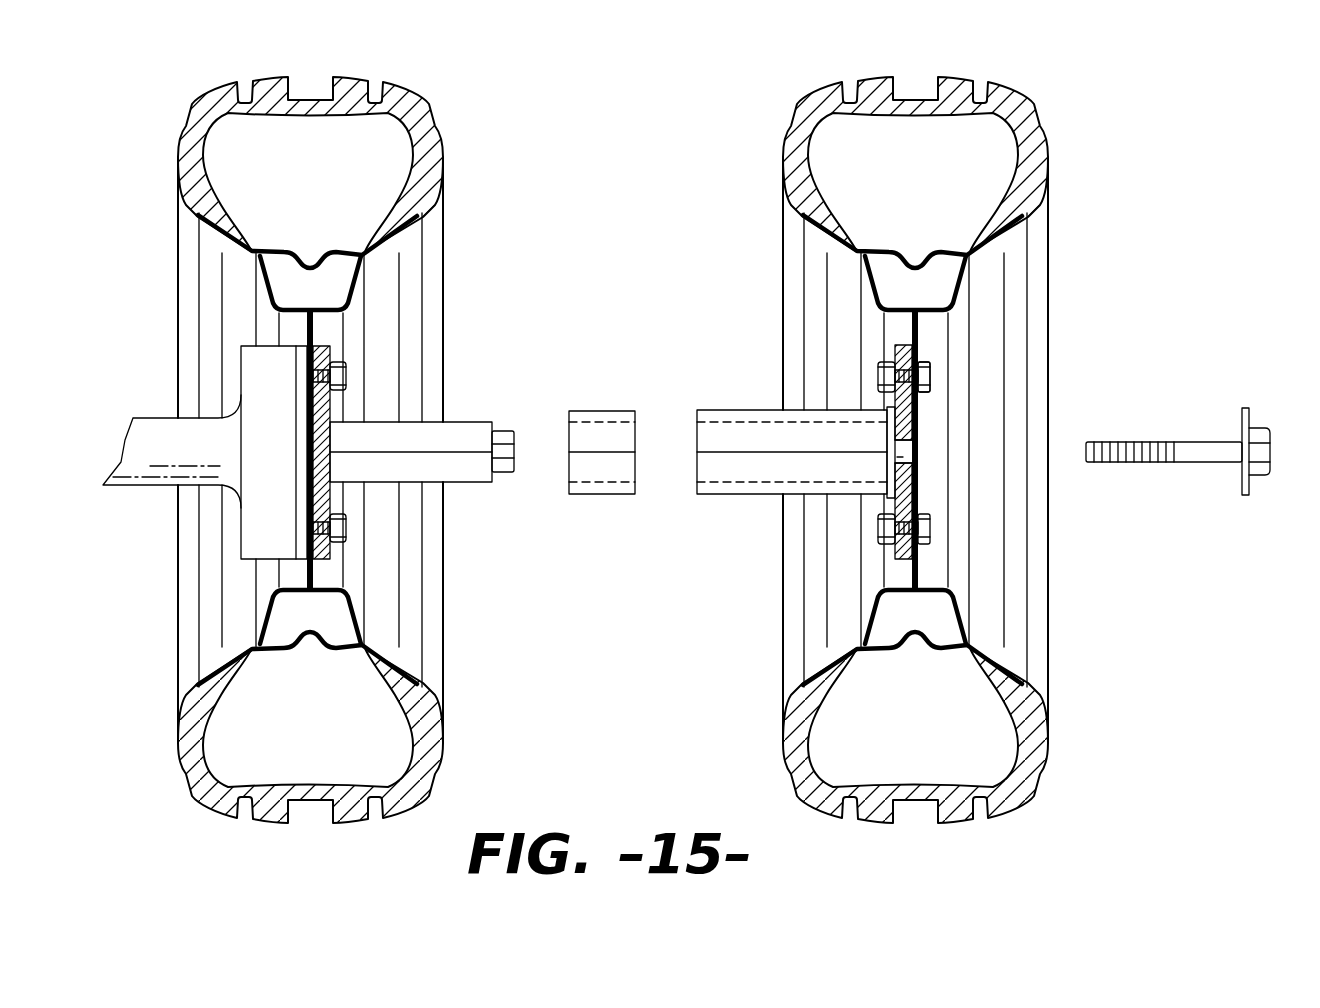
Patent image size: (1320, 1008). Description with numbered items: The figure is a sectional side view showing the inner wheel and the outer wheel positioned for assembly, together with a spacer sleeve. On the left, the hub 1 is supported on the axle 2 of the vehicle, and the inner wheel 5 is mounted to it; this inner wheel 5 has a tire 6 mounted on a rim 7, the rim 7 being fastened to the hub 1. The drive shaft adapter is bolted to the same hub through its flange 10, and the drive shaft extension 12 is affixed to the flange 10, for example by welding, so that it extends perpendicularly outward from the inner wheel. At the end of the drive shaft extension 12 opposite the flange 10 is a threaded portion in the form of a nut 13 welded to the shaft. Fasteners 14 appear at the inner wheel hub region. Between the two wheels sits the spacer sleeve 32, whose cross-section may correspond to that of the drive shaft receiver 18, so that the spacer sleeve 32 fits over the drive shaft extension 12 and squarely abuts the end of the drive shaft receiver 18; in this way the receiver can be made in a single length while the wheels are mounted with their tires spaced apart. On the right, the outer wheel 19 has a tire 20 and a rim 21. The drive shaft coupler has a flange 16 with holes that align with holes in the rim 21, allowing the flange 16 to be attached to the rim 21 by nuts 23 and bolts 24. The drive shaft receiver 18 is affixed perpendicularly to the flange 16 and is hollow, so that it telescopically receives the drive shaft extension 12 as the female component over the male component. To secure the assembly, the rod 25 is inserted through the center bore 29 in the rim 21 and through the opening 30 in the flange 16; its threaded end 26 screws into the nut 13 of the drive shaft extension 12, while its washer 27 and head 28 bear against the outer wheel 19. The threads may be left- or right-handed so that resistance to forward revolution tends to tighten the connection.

The hub 1 is at (258, 368).
The axle 2 is at (151, 420).
The inner wheel 5 is at (335, 427).
The tire 6 is at (329, 450).
The rim 7 is at (424, 236).
The flange 10 is at (333, 357).
The drive shaft extension 12 is at (453, 430).
The nut 13 is at (505, 453).
The bolts 14 is at (347, 373).
The spacer sleeve 32 is at (593, 427).
The outer wheel 19 is at (925, 427).
The tire 20 is at (789, 150).
The rim 21 is at (950, 450).
The nuts 23 is at (877, 377).
The bolts 24 is at (930, 375).
The drive shaft receiver 18 is at (723, 470).
The opening 30 is at (907, 457).
The center bore 29 is at (917, 453).
The flange 16 is at (893, 548).
The rod 25 is at (1197, 449).
The threaded end 26 is at (1093, 440).
The washer 27 is at (1248, 412).
The head 28 is at (1255, 453).